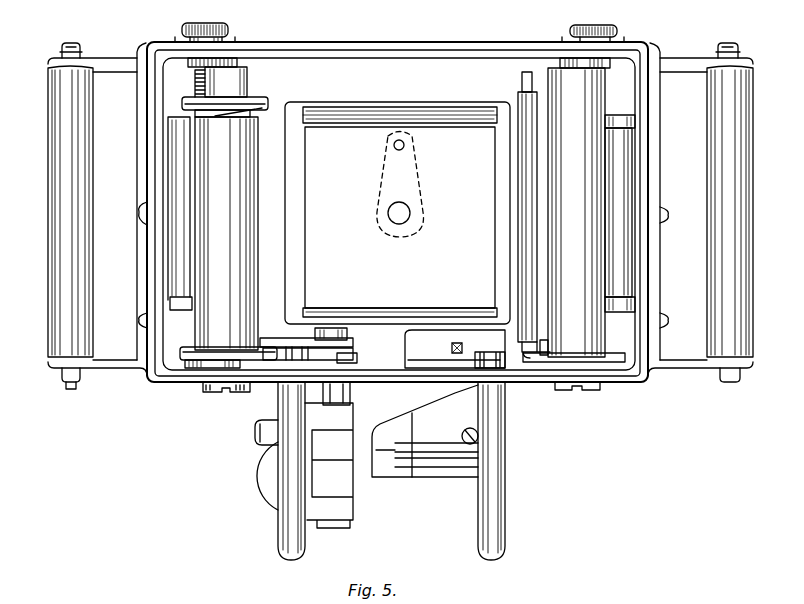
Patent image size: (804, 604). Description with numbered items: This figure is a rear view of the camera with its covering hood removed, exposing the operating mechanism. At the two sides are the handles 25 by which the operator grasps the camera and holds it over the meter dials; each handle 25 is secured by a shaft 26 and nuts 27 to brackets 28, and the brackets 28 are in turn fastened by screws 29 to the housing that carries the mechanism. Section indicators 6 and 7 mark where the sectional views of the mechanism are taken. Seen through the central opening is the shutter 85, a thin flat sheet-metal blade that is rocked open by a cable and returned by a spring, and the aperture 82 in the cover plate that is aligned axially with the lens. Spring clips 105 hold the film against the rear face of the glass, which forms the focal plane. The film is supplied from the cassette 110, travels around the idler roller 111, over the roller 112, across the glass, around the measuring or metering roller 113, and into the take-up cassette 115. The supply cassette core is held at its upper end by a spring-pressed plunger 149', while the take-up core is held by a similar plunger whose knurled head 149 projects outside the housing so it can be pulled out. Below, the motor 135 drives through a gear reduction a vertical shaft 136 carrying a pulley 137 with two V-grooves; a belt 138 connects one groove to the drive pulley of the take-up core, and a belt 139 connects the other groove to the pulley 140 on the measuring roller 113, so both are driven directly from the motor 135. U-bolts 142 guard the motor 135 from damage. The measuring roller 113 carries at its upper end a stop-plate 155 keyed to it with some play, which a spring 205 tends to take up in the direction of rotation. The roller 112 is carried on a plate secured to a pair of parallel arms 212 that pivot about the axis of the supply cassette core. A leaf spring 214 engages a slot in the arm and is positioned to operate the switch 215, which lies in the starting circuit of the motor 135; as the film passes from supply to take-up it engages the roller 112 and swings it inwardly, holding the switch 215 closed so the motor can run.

The section line 6- 6 is at (40, 52).
The section line 7- 7 is at (132, 335).
The handle 25 is at (53, 243).
The shaft 26 is at (73, 388).
The nuts 27 is at (82, 55).
The bracket 28 is at (110, 361).
The screws 29 is at (138, 221).
The aperture 82 is at (411, 213).
The shutter 85 is at (419, 183).
The spring clips 105 is at (388, 113).
The cassette 110 is at (630, 185).
The idler roller 111 is at (592, 100).
The roller 112 is at (519, 98).
The measuring or metering roller 113 is at (248, 268).
The take-up cassette 115 is at (184, 311).
The motor 135 is at (430, 462).
The vertical shaft 136 is at (351, 396).
The pulley 137 is at (355, 360).
The belt 138 is at (282, 337).
The belt 139 is at (227, 347).
The pulley 140 is at (192, 367).
The U-bolts 142 is at (497, 490).
The knurled head 149 is at (222, 29).
The spring-pressed plunger 149' is at (610, 24).
The stop-plate 155 is at (254, 97).
The spring 205 is at (264, 114).
The parallel arms 212 is at (533, 73).
The leaf spring 214 is at (452, 349).
The switch 215 is at (414, 340).